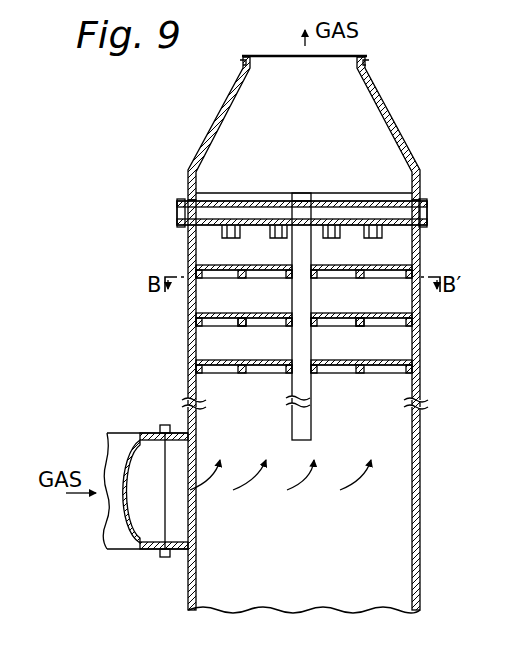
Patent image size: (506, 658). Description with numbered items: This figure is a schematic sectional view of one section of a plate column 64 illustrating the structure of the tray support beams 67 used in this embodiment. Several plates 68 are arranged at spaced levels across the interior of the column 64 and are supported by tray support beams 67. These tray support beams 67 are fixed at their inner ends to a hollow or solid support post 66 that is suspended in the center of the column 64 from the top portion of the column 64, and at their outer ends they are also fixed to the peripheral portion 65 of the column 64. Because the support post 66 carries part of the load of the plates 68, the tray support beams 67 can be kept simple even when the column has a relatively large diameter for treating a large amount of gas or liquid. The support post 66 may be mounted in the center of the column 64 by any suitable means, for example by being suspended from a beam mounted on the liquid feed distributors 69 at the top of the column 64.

The plate column 64 is at (436, 103).
The peripheral portion 65 is at (420, 316).
The support post 66 is at (312, 398).
The tray support beams 67 is at (385, 326).
The plates 68 is at (393, 268).
The liquid feed distributors 69 is at (424, 202).